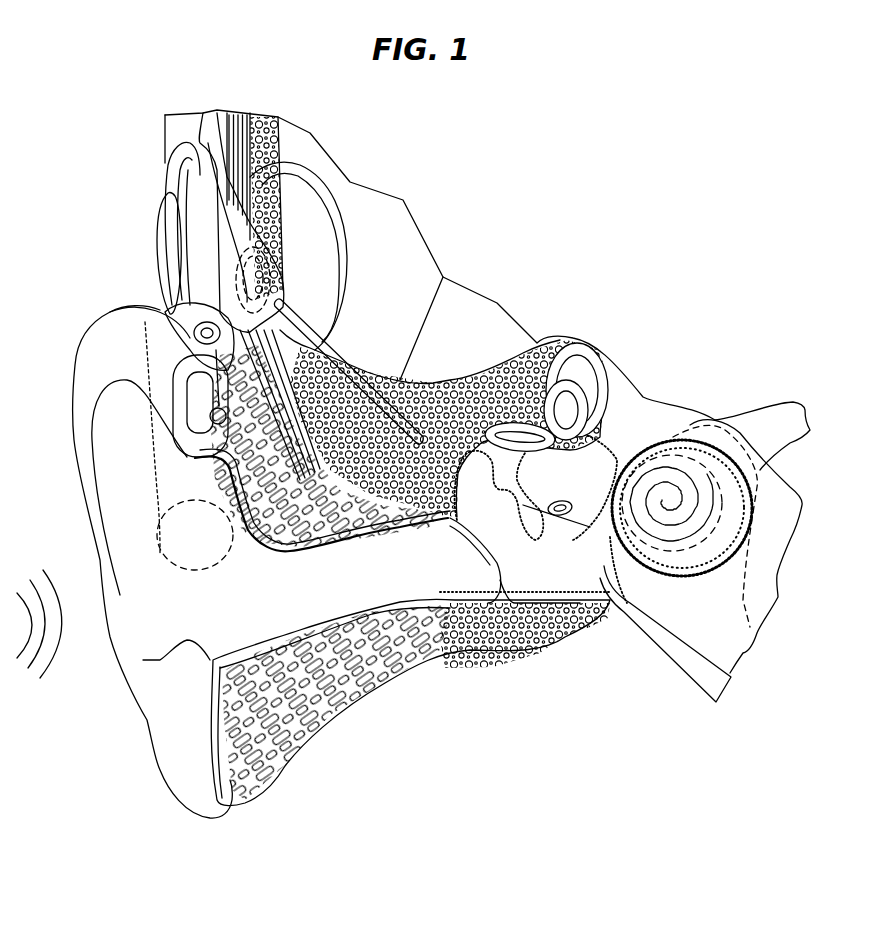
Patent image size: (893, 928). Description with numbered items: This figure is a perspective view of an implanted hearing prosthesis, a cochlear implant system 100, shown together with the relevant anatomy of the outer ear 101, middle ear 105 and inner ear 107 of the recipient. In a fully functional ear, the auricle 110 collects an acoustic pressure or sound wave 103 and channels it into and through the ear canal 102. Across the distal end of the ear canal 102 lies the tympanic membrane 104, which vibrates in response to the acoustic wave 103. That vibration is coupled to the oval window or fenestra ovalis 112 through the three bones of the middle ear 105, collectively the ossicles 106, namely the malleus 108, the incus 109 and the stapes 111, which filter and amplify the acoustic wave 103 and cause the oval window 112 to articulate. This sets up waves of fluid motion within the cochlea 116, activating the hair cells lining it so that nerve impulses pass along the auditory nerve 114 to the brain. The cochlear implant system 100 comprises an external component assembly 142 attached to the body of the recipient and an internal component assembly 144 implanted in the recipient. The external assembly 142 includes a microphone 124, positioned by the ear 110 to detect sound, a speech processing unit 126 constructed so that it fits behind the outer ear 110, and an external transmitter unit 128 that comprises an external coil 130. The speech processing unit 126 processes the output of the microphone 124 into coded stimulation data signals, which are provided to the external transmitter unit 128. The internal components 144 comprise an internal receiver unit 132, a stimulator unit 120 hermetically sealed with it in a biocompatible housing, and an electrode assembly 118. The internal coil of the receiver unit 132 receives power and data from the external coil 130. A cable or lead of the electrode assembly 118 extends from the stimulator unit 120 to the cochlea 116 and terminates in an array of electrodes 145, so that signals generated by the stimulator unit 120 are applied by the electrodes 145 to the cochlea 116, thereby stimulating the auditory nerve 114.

The cochlear implant system 100 is at (86, 168).
The outer ear 101 is at (196, 842).
The ear canal 102 is at (330, 583).
The acoustic pressure or sound wave 103 is at (58, 593).
The tympanic membrane 104 is at (483, 527).
The middle ear 105 is at (519, 713).
The ossicles 106 is at (535, 605).
The inner ear 107 is at (725, 748).
The malleus 108 is at (573, 343).
The incus 109 is at (503, 440).
The auricle 110 is at (152, 757).
The stapes 111 is at (570, 430).
The oval window or fenestra ovalis 112 is at (613, 462).
The auditory nerve 114 is at (783, 413).
The cochlea 116 is at (680, 560).
The electrode assembly 118 is at (443, 277).
The stimulator unit 120 is at (280, 273).
The microphone 124 is at (125, 306).
The speech processing unit 126 is at (170, 296).
The external transmitter unit 128 is at (160, 234).
The external coil 130 is at (168, 163).
The internal receiver unit 132 is at (210, 160).
The external component assembly 142 is at (148, 82).
The internal component assembly 144 is at (286, 76).
The array of electrodes 145 is at (762, 635).